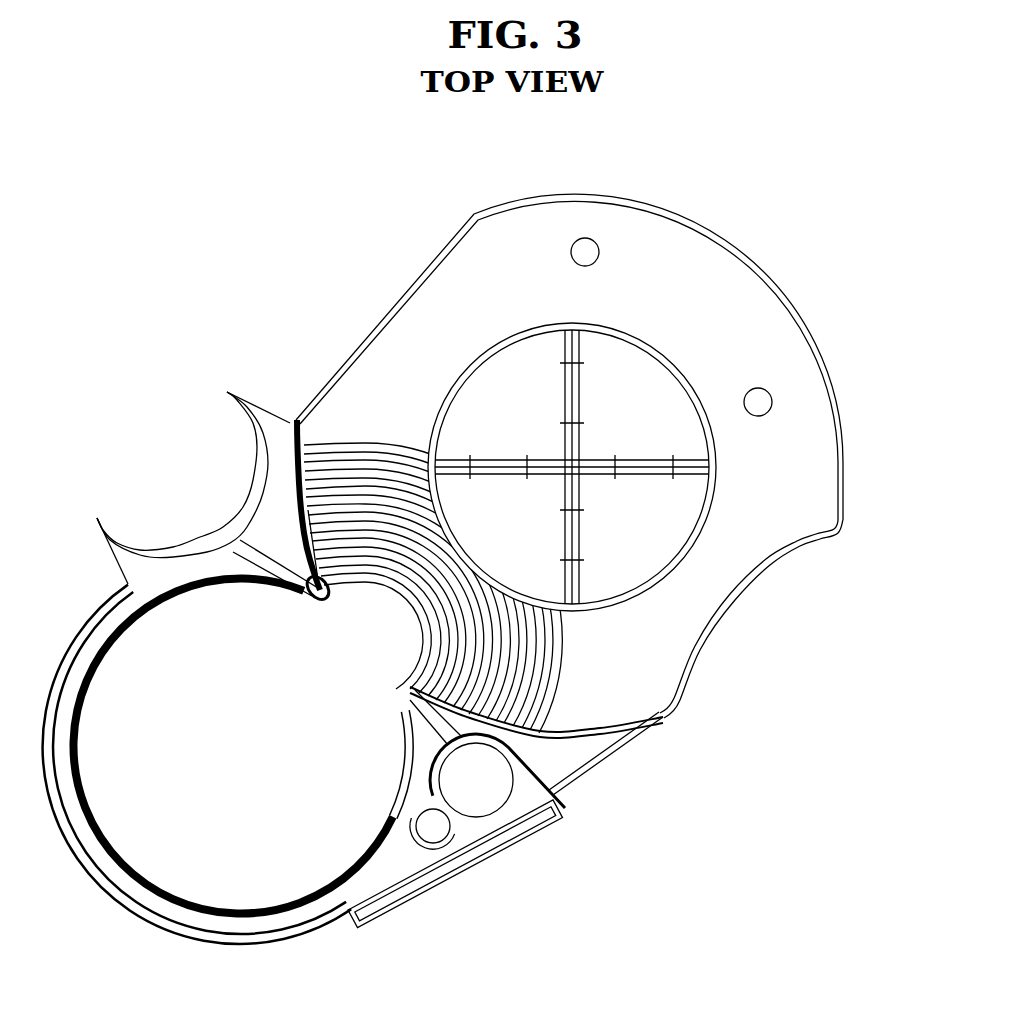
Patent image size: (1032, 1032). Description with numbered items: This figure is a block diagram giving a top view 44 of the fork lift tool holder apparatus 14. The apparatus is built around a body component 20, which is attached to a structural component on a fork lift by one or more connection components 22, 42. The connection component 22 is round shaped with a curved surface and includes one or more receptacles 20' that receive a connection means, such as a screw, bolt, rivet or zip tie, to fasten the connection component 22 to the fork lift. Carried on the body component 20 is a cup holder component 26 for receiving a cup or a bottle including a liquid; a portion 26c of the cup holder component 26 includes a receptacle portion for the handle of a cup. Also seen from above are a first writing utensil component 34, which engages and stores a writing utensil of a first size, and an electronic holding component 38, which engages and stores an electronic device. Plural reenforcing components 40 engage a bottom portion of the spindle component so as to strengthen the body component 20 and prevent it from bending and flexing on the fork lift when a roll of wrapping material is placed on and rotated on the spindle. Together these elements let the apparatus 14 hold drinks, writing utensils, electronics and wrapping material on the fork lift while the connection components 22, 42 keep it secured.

The fork lift tool holder apparatus 14 is at (343, 360).
The body component 20 is at (602, 467).
The receptacle 20' is at (723, 287).
The connection component 22 is at (207, 547).
The cup holder component 26 is at (868, 570).
The portion of the cup holder component 26c is at (376, 631).
The first writing utensil component 34 is at (497, 775).
The electronic holding component 38 is at (520, 840).
The reenforcing components 40 is at (533, 655).
The connection component 42 is at (723, 610).
The top view 44 is at (793, 122).